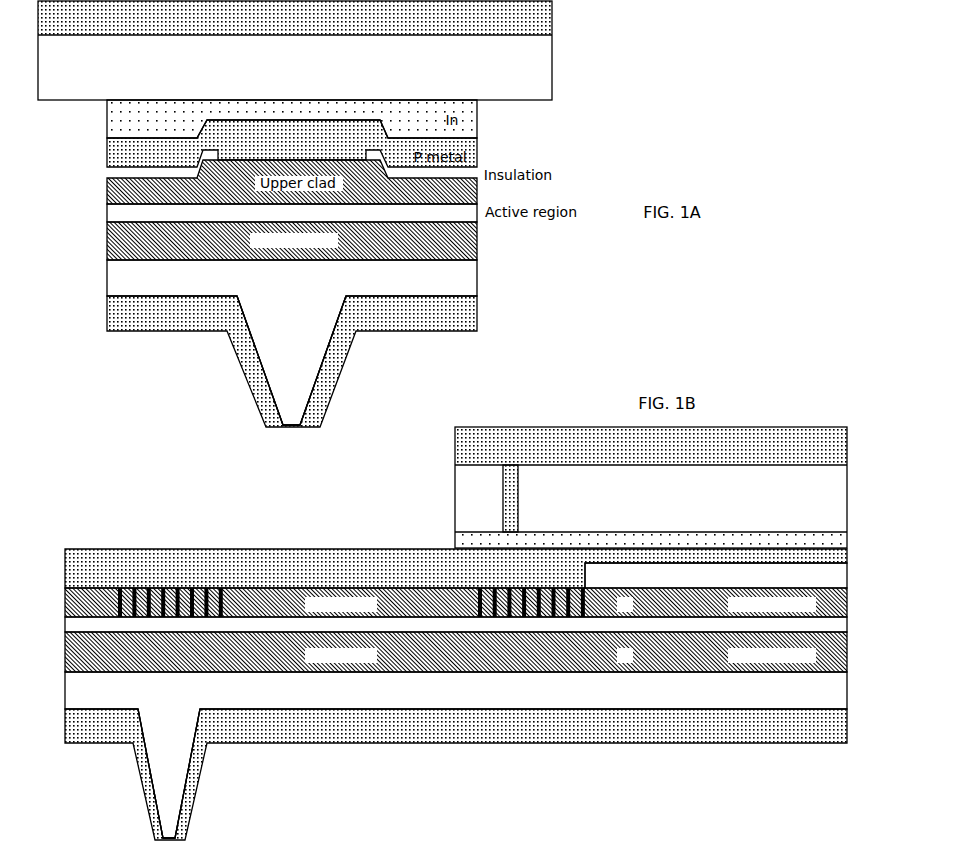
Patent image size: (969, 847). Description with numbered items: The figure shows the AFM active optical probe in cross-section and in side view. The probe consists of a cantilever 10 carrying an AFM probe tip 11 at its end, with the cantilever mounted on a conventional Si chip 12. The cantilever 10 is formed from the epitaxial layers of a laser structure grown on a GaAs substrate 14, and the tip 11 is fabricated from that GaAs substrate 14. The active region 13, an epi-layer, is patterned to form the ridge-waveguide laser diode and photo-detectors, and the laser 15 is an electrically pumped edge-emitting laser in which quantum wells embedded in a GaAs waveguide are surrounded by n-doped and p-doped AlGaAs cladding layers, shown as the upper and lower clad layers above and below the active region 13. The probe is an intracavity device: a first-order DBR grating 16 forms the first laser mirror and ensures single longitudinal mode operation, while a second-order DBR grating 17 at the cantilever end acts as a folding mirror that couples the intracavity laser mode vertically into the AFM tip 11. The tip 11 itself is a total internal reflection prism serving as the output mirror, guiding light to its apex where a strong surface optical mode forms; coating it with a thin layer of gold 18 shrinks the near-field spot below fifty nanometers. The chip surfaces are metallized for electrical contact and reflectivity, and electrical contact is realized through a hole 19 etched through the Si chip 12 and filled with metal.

In FIG. 1B, the cantilever 10 is at (123, 549).
In FIG. 1A, the AFM probe tip 11 is at (283, 373).
In FIG. 1B, the AFM probe tip 11 is at (175, 797).
In FIG. 1A, the Si chip 12 is at (552, 69).
In FIG. 1B, the Si chip 12 is at (793, 480).
In FIG. 1A, the active region 13 is at (107, 210).
In FIG. 1B, the active region 13 is at (72, 624).
In FIG. 1A, the GaAs substrate 14 is at (472, 273).
In FIG. 1B, the GaAs substrate 14 is at (530, 698).
In FIG. 1A, the laser 15 is at (107, 240).
In FIG. 1B, the laser 15 is at (398, 668).
In FIG. 1B, the first-order DBR grating 16 is at (493, 588).
In FIG. 1B, the second-order DBR grating 17 is at (161, 588).
In FIG. 1A, the thin layer of gold 18 is at (330, 380).
In FIG. 1B, the thin layer of gold 18 is at (147, 790).
In FIG. 1B, the hole 19 is at (503, 507).